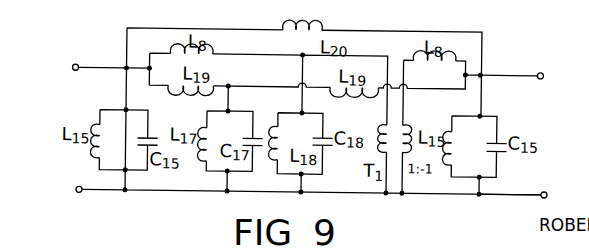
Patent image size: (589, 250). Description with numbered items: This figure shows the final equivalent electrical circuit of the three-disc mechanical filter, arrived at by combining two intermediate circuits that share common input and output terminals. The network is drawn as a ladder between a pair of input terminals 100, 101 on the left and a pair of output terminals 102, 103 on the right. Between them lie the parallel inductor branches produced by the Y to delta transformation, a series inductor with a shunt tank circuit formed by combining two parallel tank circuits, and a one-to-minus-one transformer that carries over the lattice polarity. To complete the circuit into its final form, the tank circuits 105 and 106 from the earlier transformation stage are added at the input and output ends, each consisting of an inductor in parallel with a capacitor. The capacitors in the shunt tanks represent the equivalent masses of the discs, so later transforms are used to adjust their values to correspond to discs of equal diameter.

The input terminal 100 is at (78, 68).
The input terminal (ground) 101 is at (83, 195).
The output terminal 102 is at (543, 71).
The output terminal (ground) 103 is at (548, 186).
The tank circuit 105 is at (138, 127).
The tank circuit 106 is at (495, 128).